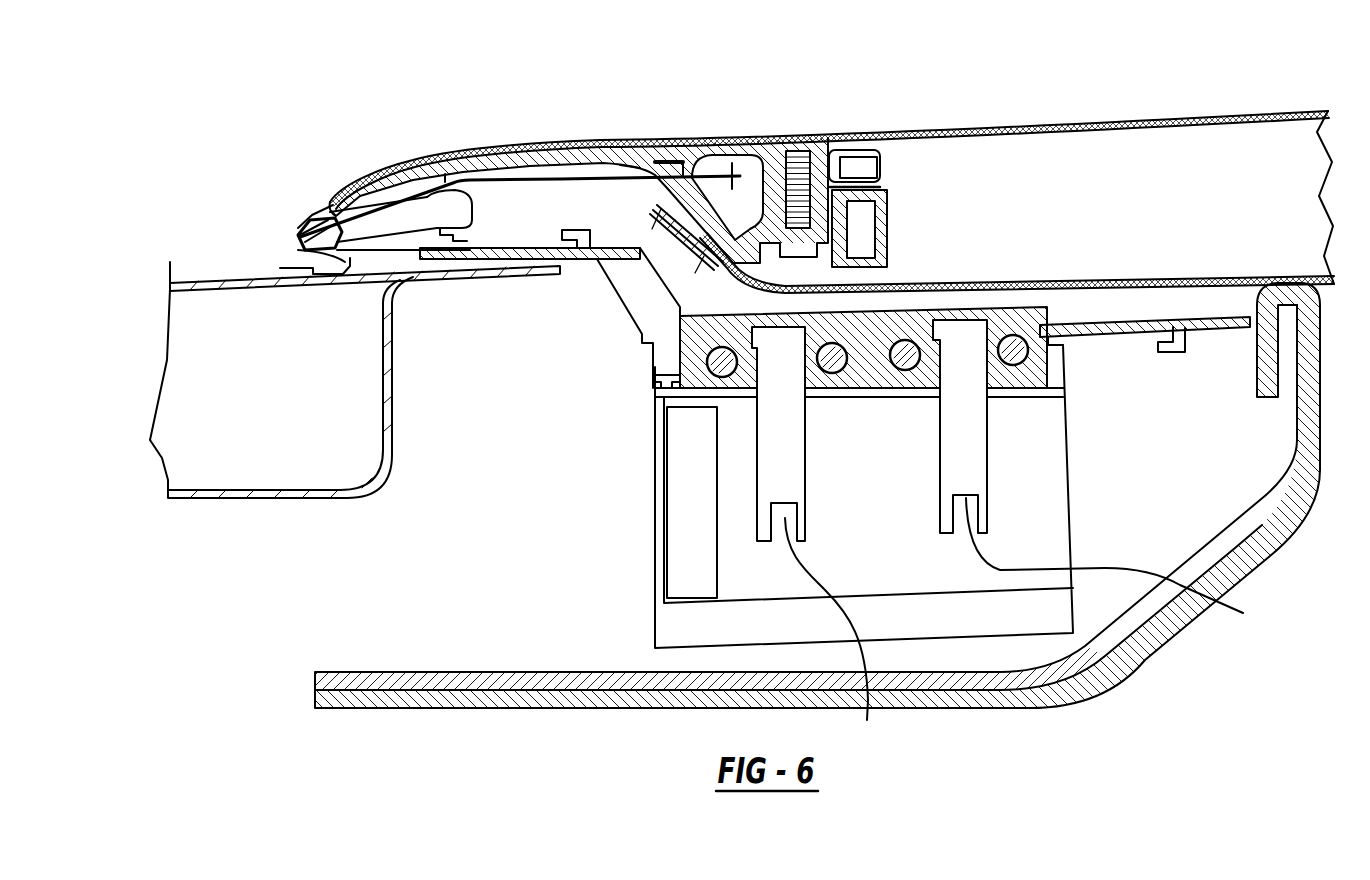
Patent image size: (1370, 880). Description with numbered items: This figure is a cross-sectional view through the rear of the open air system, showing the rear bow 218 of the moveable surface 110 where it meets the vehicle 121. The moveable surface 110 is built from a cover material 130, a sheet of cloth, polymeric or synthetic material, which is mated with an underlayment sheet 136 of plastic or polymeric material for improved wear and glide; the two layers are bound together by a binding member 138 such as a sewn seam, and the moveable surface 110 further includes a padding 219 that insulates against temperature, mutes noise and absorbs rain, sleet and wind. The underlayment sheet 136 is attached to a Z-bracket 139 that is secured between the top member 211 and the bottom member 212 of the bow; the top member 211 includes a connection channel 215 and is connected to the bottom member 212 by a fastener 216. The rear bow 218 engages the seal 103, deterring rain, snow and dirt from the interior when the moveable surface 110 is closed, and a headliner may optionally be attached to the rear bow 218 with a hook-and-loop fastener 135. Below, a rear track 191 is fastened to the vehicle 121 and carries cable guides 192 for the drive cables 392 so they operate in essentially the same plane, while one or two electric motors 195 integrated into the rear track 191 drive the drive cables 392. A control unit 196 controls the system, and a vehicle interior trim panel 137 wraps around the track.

The seal 103 is at (413, 236).
The moveable surface 110 is at (1262, 90).
The vehicle 121 is at (265, 523).
The cover material 130 is at (1038, 122).
The hook-and-loop fastener 135 is at (645, 183).
The underlayment sheet 136 is at (530, 182).
The vehicle interior trim panel 137 is at (1275, 545).
The binding member 138 is at (297, 218).
The Z-bracket 139 is at (707, 170).
The rear track 191 is at (1097, 360).
The cable guides 192 is at (708, 352).
The electric motor 195 is at (1029, 625).
The control unit 196 is at (690, 577).
The top member 211 is at (640, 153).
The bottom member 212 is at (890, 247).
The connection channel 215 is at (880, 157).
The fastener 216 is at (833, 198).
The rear bow 218 is at (933, 227).
The padding 219 is at (1300, 188).
The drive cables 392 is at (1000, 340).